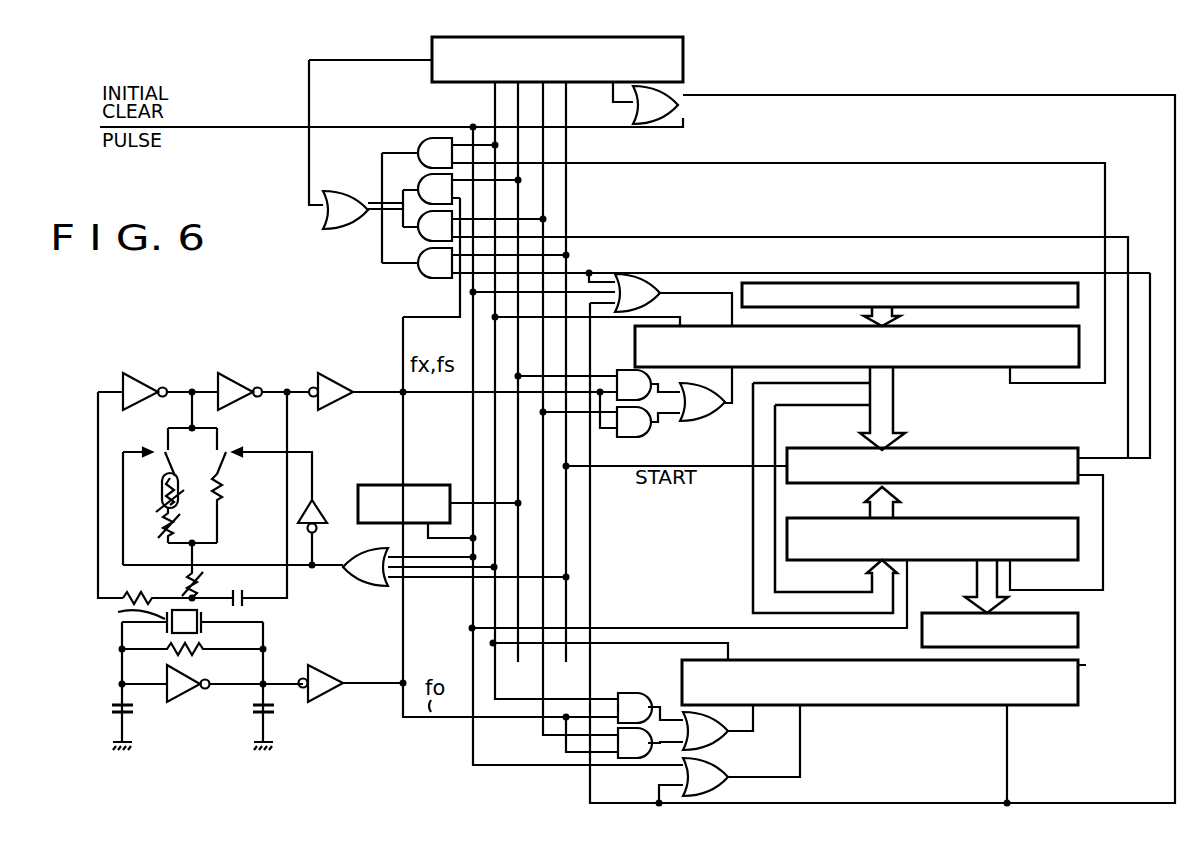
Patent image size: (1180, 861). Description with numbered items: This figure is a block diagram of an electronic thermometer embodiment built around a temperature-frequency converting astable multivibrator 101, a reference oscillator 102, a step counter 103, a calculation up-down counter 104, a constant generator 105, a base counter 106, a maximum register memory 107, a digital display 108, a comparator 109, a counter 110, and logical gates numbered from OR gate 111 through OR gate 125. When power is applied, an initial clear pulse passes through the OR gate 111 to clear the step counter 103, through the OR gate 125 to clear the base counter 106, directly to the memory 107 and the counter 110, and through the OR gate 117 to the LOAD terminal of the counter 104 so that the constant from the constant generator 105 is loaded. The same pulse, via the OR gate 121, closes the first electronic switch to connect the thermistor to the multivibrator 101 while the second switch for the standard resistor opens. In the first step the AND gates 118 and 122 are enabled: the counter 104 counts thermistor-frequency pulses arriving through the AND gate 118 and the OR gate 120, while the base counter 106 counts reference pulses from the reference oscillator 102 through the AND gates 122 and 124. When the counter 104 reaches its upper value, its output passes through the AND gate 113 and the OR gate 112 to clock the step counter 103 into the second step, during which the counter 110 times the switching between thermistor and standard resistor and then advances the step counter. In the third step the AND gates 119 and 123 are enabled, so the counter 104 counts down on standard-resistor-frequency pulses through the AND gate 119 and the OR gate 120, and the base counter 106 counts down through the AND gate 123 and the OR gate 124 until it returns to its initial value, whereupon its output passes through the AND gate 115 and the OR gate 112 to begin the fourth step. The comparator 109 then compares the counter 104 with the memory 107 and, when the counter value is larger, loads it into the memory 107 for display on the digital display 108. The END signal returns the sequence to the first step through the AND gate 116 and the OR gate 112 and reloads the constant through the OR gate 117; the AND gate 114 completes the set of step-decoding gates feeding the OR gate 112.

The astable multivibrator 101 is at (196, 380).
The reference oscillator 102 is at (187, 705).
The step counter 103 is at (683, 58).
The calculation up-down counter 104 is at (952, 367).
The constant generator 105 is at (762, 283).
The base counter 106 is at (862, 705).
The maximum register memory 107 is at (818, 518).
The digital display 108 is at (1078, 636).
The comparator 109 is at (985, 448).
The counter 110 is at (375, 485).
The OR gate 111 is at (683, 112).
The OR gate 112 is at (338, 228).
The AND gate 113 is at (418, 150).
The AND gate 114 is at (420, 186).
The AND gate 115 is at (420, 228).
The AND gate 116 is at (422, 278).
The OR gate 117 is at (634, 273).
The AND gate 118 is at (618, 370).
The AND gate 119 is at (636, 437).
The OR gate 120 is at (712, 422).
The OR gate 121 is at (360, 587).
The AND gate 122 is at (634, 693).
The AND gate 123 is at (630, 758).
The OR gate 124 is at (714, 744).
The OR gate 125 is at (714, 790).